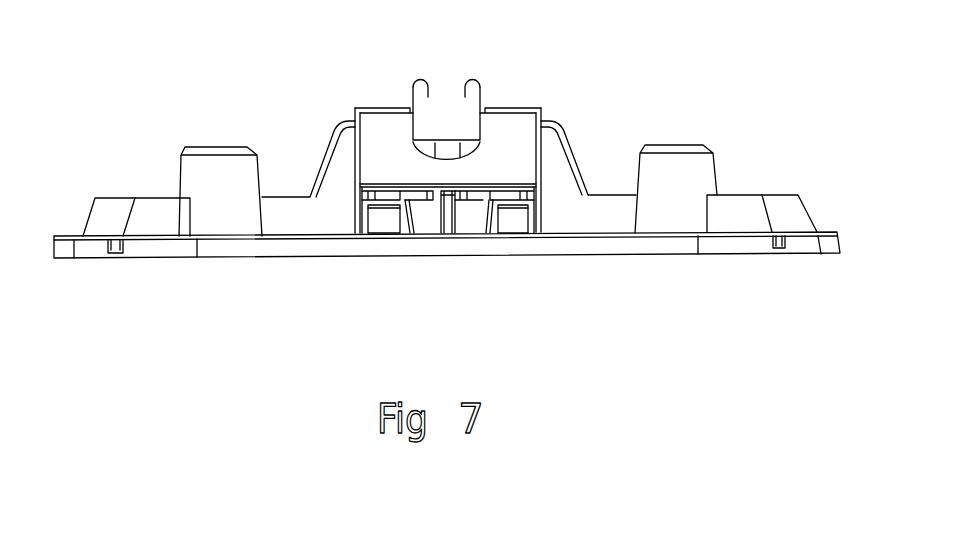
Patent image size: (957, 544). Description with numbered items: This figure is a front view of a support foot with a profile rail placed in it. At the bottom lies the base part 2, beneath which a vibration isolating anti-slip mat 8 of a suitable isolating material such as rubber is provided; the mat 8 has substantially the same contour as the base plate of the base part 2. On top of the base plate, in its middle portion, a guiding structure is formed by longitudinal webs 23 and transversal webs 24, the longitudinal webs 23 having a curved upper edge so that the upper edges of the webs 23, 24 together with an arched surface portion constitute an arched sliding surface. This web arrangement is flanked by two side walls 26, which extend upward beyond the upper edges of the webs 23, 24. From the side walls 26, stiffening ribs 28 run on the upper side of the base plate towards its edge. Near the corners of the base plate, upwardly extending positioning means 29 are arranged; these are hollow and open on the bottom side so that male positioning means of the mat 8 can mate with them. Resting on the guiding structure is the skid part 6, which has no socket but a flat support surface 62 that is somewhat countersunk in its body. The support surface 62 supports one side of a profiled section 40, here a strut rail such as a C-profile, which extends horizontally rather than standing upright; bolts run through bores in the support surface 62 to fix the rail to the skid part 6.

The base part 2 is at (818, 228).
The skid part 6 is at (510, 107).
The anti-slip mat 8 is at (622, 247).
The longitudinal webs 23 is at (490, 225).
The transversal webs 24 is at (383, 223).
The side walls 26 is at (357, 222).
The stiffening ribs 28 is at (157, 218).
The positioning means 29 is at (223, 168).
The profiled section 40 is at (413, 86).
The support surface 62 is at (448, 150).